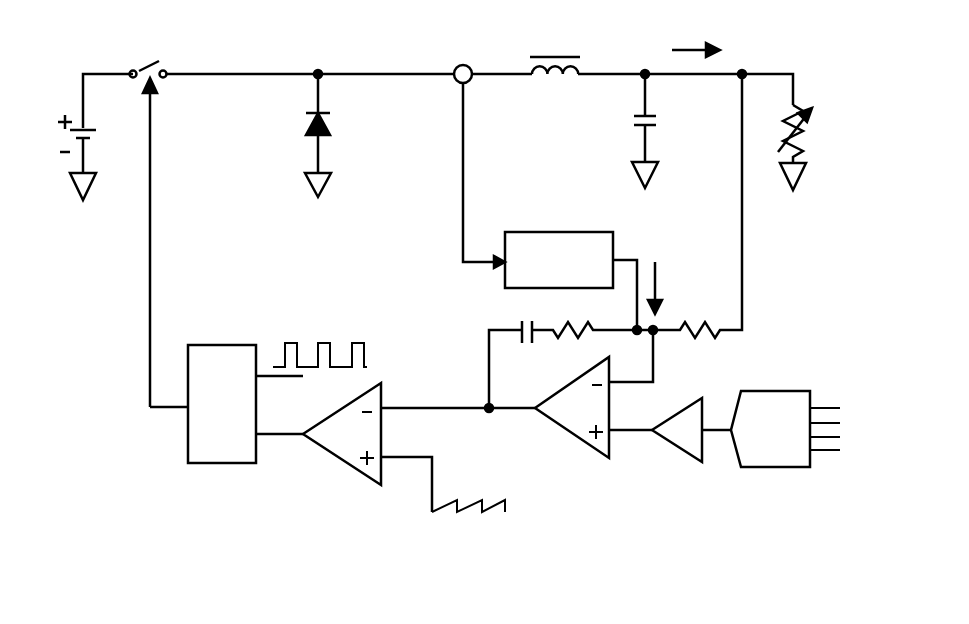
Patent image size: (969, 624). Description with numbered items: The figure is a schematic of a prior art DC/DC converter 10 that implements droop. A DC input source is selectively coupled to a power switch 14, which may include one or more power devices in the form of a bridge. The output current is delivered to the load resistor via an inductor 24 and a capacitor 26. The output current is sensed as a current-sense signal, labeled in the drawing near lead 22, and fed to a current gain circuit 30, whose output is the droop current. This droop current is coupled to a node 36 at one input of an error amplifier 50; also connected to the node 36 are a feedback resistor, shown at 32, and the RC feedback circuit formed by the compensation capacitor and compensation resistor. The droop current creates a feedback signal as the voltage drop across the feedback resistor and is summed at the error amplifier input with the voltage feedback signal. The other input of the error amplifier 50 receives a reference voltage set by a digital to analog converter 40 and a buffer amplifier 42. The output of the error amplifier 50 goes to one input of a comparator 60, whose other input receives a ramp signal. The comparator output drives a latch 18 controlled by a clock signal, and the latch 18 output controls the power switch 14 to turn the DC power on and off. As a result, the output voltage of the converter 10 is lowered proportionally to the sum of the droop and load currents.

The converter 10 is at (458, 312).
The power switch 14 is at (205, 153).
The latch 18 is at (176, 425).
The current sense signal Ics 22 is at (450, 210).
The inductor 24 is at (727, 44).
The capacitor 26 is at (683, 128).
The current gain circuit 30 is at (536, 225).
The resistor R1 32 is at (730, 320).
The node 36 is at (668, 347).
The digital to analog converter 40 is at (790, 474).
The buffer amplifier 42 is at (673, 460).
The error amplifier 50 is at (581, 458).
The comparator 60 is at (335, 478).